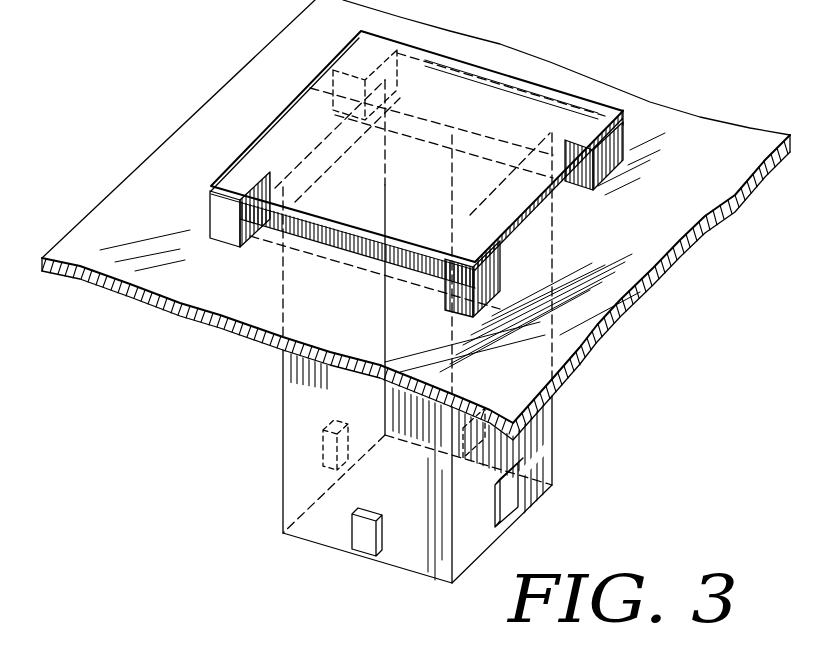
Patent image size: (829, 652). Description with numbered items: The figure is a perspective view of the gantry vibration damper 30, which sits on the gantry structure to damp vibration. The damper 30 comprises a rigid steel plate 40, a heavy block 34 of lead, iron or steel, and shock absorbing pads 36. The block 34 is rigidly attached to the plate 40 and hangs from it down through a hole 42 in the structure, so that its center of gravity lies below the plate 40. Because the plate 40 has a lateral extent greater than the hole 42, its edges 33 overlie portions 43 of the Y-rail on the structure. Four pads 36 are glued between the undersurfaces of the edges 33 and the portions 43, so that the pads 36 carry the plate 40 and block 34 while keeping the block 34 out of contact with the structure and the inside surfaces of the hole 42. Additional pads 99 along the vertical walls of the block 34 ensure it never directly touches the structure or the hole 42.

The gantry vibration damper 30 is at (160, 79).
The edges of plate 33 is at (508, 80).
The block 34 is at (550, 428).
The shock absorbing pads 36 is at (330, 90).
The plate 40 is at (570, 117).
The hole 42 is at (370, 257).
The portions of Y-rail 43 is at (611, 240).
The additional pads 99 is at (463, 428).